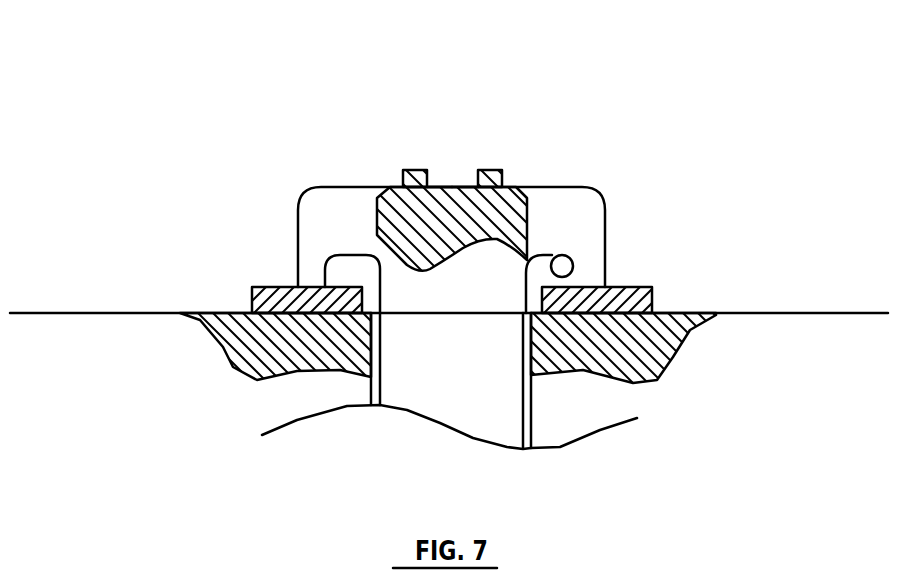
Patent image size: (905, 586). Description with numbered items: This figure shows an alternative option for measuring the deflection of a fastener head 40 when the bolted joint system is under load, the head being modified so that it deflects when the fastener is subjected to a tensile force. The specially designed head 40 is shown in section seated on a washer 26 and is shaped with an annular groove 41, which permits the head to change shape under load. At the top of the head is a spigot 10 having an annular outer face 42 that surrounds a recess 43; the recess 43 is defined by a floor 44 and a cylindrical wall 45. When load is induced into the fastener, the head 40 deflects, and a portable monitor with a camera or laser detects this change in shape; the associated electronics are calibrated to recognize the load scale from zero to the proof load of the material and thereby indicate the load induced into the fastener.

The spigot 10 is at (402, 177).
The washer 26 is at (250, 300).
The fastener head 40 is at (587, 208).
The annular groove 41 is at (575, 277).
The annular outer face 42 is at (490, 170).
The recess 43 is at (433, 178).
The floor 44 is at (445, 187).
The cylindrical wall 45 is at (461, 183).